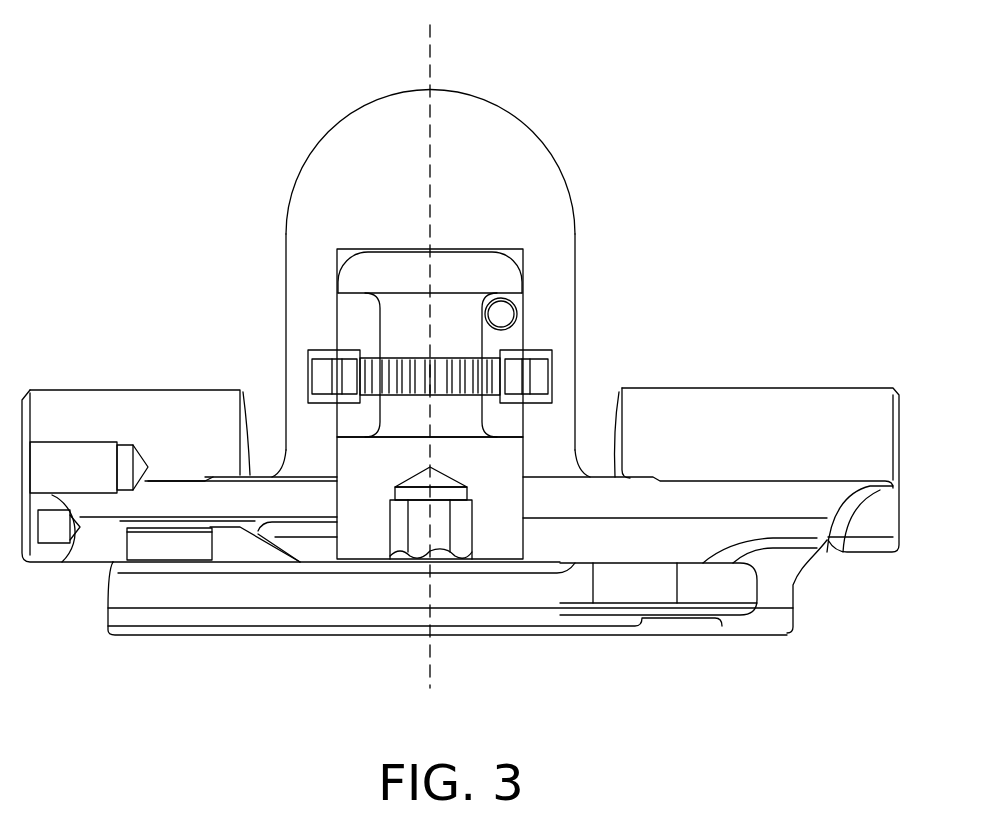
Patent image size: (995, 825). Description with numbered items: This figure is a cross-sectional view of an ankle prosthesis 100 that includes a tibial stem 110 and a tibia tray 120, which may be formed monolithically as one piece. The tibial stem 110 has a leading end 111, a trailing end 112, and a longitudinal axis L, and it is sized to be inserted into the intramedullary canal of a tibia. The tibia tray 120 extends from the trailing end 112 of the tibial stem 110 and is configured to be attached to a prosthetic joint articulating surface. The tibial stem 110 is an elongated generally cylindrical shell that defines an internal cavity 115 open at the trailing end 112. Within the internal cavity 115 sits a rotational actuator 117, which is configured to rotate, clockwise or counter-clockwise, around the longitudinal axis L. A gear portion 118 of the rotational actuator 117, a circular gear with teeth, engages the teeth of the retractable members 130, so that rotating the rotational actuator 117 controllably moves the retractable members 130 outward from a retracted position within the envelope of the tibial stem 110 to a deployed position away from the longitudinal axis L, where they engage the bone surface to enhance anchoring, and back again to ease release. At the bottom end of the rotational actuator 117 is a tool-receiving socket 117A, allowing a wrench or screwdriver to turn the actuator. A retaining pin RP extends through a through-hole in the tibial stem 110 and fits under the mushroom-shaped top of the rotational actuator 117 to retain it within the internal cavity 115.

The ankle prosthesis 100 is at (177, 167).
The tibial stem 110 is at (458, 265).
The leading end 111 is at (358, 133).
The trailing end 112 is at (300, 463).
The internal cavity 115 is at (358, 307).
The rotational actuator 117 is at (367, 465).
The tool-receiving socket 117A is at (460, 537).
The gear portion 118 is at (480, 368).
The tibia tray 120 is at (792, 397).
The retractable members 130 is at (320, 377).
The retaining pin RP is at (510, 312).
The longitudinal axis L is at (432, 35).